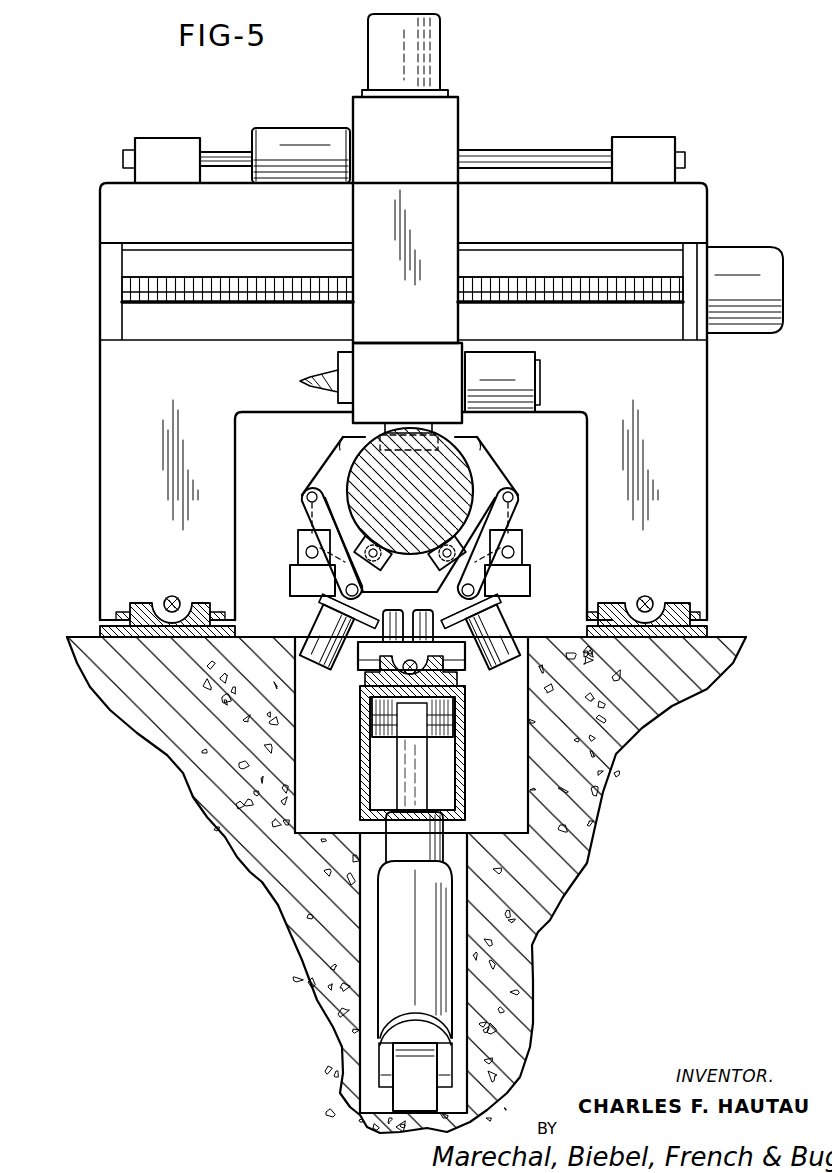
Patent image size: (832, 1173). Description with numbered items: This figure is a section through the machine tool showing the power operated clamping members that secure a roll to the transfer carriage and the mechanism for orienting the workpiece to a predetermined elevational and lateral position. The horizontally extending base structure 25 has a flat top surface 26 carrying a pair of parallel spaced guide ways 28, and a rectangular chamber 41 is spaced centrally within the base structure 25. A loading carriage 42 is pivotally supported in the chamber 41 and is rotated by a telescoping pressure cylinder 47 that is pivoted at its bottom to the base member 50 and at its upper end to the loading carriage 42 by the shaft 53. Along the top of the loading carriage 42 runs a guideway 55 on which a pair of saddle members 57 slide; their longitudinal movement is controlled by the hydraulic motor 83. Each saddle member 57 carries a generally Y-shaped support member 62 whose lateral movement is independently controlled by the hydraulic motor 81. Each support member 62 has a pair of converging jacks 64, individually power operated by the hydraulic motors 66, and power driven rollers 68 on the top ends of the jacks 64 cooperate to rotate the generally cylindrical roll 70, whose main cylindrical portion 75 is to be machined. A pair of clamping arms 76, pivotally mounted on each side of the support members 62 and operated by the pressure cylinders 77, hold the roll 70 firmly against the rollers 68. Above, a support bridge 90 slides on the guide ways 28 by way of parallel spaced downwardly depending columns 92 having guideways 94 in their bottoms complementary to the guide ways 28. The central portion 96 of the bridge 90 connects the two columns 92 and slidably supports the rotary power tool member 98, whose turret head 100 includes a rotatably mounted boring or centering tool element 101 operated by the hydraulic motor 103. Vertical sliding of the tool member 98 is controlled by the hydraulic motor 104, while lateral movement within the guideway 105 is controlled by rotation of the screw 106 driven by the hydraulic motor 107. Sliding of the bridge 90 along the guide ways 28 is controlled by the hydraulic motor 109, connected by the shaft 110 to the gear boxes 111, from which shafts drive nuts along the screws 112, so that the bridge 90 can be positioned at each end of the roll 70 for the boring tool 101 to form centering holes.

The base structure 25 is at (72, 658).
The top surface 26 is at (83, 637).
The guide ways 28 is at (135, 615).
The rectangular chamber 41 is at (517, 818).
The loading carriage 42 is at (466, 753).
The telescoping pressure cylinder 47 is at (393, 957).
The base member 50 is at (413, 1102).
The shaft 53 is at (372, 721).
The guideway 55 is at (368, 680).
The saddle members 57 is at (462, 660).
The Y-shaped support members 62 is at (530, 579).
The jacks 64 is at (445, 568).
The hydraulic motors 66 is at (313, 632).
The power driven rollers 68 is at (425, 530).
The roll 70 is at (362, 466).
The main cylindrical portion 75 is at (474, 488).
The clamping arms 76 is at (324, 470).
The pressure cylinders 77 is at (299, 542).
The hydraulic motor 81 is at (312, 580).
The hydraulic motor 83 is at (507, 580).
The support bridge 90 is at (716, 190).
The columns 92 is at (104, 440).
The guideways 94 is at (132, 612).
The central portion 96 is at (108, 200).
The rotary power tool member 98 is at (452, 126).
The turret head 100 is at (425, 388).
The boring or centering tool element 101 is at (333, 362).
The hydraulic motor 103 is at (530, 378).
The hydraulic motor 104 is at (432, 46).
The guideway 105 is at (232, 245).
The screw 106 is at (587, 282).
The hydraulic motor 107 is at (752, 260).
The hydraulic motor 109 is at (291, 135).
The shaft 110 is at (572, 160).
The gear boxes 111 is at (184, 145).
The screws 112 is at (172, 595).